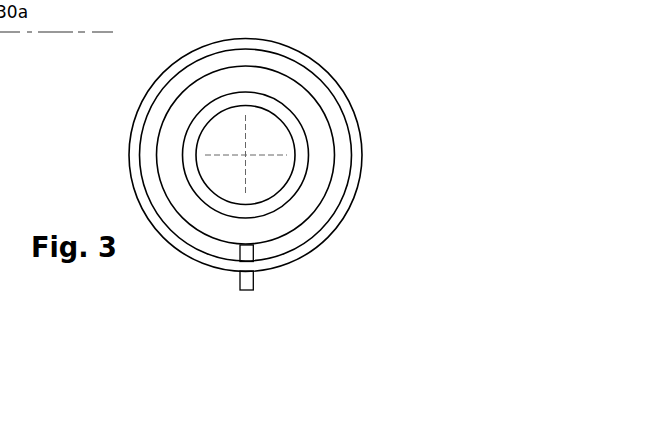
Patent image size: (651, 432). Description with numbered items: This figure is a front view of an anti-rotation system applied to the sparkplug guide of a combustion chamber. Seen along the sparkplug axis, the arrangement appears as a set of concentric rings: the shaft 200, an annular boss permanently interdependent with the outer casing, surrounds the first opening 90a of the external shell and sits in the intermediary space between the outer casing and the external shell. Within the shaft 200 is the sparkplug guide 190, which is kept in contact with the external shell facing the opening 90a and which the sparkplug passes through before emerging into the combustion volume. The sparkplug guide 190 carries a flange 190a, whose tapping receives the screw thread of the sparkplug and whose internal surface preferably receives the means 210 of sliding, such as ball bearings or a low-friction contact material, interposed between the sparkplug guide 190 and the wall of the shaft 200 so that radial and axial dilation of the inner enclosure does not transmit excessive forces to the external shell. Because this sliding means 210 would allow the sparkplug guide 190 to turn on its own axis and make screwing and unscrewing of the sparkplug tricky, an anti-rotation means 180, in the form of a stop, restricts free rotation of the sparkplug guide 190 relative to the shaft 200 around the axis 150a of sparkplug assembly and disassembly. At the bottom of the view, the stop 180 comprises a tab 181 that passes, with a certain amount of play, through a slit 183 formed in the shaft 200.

The shaft 200 is at (122, 127).
The means of sliding 210 is at (290, 68).
The sparkplug guide 190 is at (182, 99).
The flange 190a is at (313, 117).
The first opening 90a is at (263, 179).
The axis 150a is at (246, 157).
The anti-rotation means 180 is at (237, 280).
The tab 181 is at (248, 253).
The slit 183 is at (246, 268).